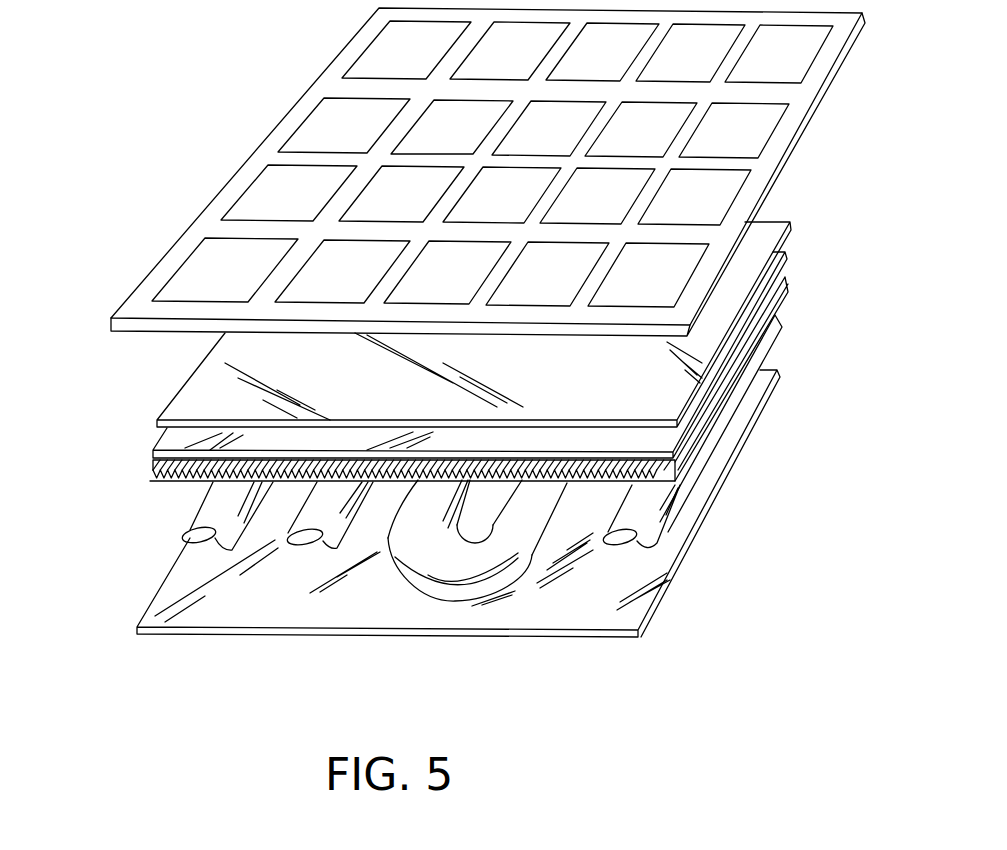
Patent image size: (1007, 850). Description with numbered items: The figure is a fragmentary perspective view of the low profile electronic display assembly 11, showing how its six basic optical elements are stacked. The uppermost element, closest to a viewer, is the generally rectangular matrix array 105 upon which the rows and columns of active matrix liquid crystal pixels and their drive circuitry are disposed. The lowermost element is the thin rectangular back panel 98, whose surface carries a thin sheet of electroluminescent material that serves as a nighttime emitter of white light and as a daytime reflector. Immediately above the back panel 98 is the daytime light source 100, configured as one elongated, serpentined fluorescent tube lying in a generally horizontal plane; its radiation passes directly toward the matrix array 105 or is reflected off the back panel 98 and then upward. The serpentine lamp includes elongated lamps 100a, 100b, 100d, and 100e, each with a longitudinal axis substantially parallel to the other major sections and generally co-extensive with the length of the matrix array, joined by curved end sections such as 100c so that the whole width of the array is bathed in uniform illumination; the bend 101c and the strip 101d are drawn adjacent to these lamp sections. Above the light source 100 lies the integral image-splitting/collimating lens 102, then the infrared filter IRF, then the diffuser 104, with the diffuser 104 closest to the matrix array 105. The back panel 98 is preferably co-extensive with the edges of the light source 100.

The electronic display assembly 11 is at (250, 78).
The matrix array 105 is at (777, 143).
The diffuser 104 is at (770, 227).
The infrared filter IRF is at (167, 432).
The integral image-splitting/collimating lens 102 is at (155, 474).
The electrode connecting strip 101d is at (773, 310).
The daytime light source 100 is at (760, 445).
The elongated lamp 100a is at (202, 515).
The elongated lamp 100b is at (325, 528).
The curved end section 100c is at (413, 530).
The elongated lamp 100d is at (529, 556).
The elongated lamp 100e is at (668, 523).
The U-shaped connecting bend 101c is at (458, 575).
The back panel 98 is at (653, 612).